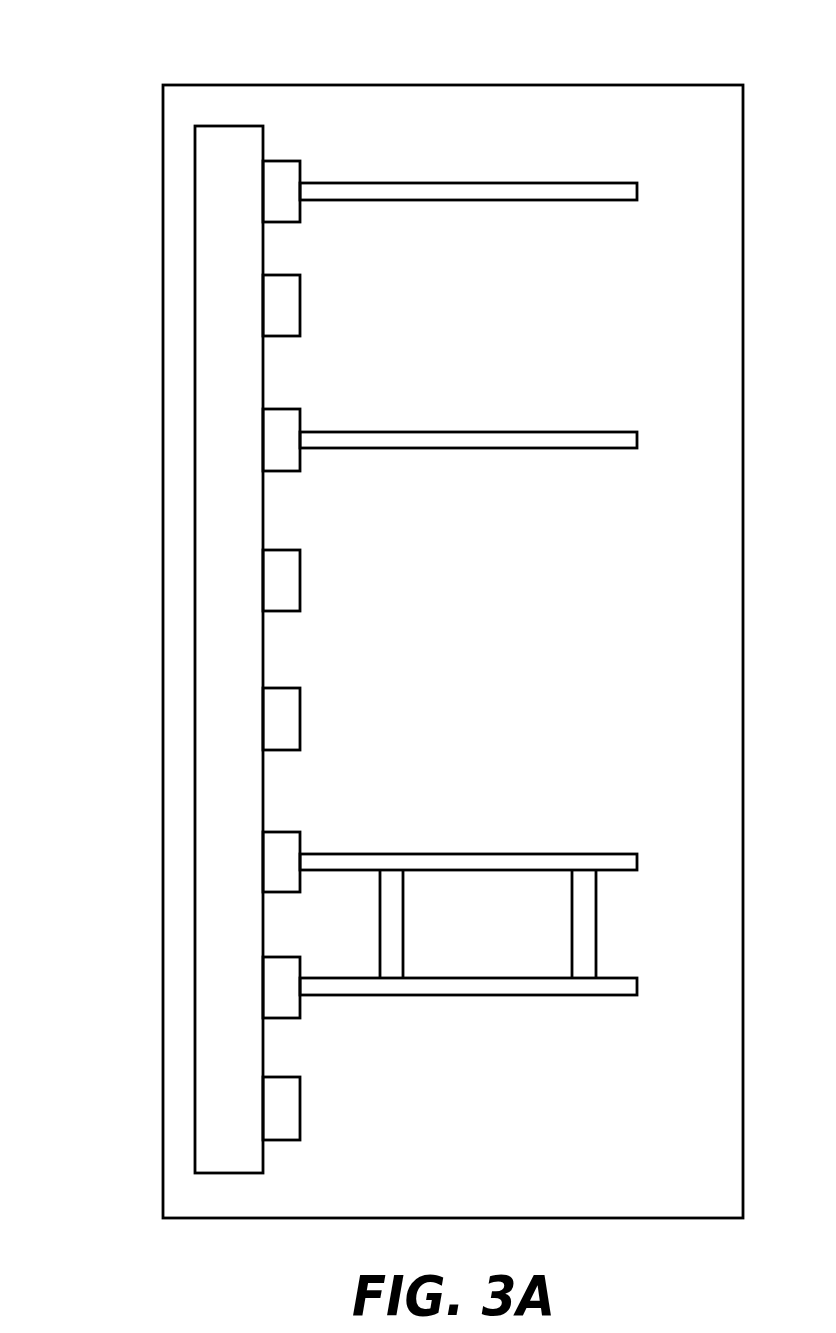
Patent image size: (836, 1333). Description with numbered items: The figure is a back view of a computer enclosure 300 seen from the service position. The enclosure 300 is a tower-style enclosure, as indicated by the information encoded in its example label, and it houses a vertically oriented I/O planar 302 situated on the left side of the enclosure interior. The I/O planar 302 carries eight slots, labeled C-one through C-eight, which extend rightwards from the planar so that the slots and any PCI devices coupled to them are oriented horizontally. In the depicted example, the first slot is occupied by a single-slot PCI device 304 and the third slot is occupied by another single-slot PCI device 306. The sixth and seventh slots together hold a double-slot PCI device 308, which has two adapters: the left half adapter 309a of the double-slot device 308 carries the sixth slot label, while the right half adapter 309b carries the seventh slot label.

The computer enclosure 300 is at (147, 82).
The I/O planar 302 is at (195, 248).
The single-slot PCI device 304 is at (590, 183).
The single-slot PCI device 306 is at (600, 432).
The double-slot PCI device 308 is at (514, 931).
The left half adapter 309a is at (600, 855).
The right half adapter 309b is at (612, 995).